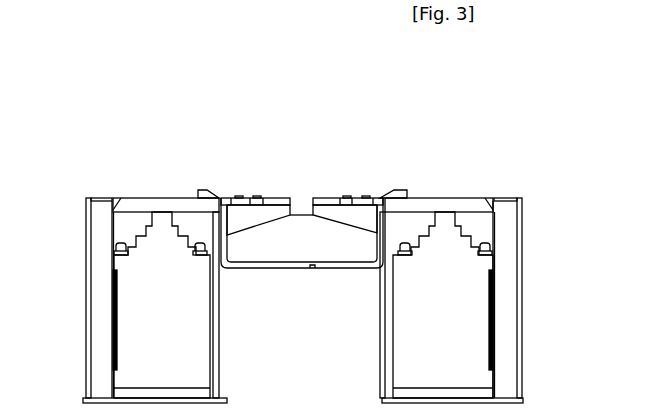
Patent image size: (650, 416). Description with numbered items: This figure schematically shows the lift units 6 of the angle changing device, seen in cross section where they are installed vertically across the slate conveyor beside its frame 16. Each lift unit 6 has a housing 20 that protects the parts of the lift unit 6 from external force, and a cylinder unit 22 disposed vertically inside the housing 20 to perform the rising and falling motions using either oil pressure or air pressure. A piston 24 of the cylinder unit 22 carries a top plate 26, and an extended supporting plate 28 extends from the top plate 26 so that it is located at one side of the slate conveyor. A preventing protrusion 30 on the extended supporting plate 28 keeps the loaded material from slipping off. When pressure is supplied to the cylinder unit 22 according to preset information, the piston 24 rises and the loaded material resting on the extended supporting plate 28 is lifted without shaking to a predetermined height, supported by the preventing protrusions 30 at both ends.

The lift unit 6 is at (93, 104).
The frame 16 is at (310, 269).
The housing 20 is at (523, 248).
The cylinder unit 22 is at (496, 332).
The piston 24 is at (442, 197).
The top plate 26 is at (478, 197).
The extended supporting plate 28 is at (363, 197).
The preventing protrusion 30 is at (199, 189).